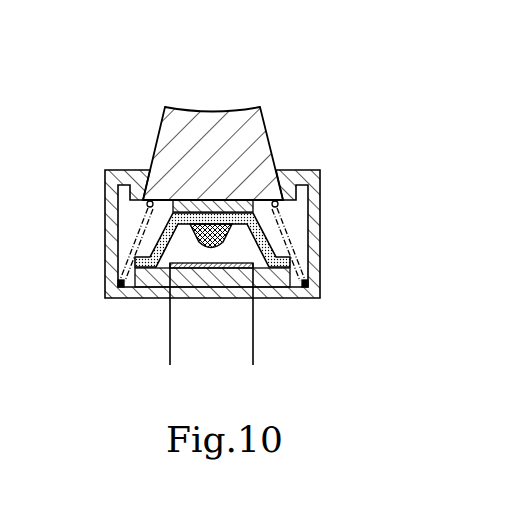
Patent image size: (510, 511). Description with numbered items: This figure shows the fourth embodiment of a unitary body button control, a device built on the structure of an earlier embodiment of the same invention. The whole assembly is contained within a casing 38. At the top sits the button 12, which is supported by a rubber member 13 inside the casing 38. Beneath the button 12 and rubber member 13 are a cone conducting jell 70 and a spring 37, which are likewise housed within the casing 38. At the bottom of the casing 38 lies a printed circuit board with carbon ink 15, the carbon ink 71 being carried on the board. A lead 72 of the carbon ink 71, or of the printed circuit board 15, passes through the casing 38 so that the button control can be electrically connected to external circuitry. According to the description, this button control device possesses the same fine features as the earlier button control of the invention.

The button 12 is at (206, 132).
The rubber member 13 is at (168, 247).
The printed circuit board with carbon ink 15 is at (272, 280).
The spring 37 is at (147, 219).
The casing 38 is at (322, 196).
The cone conducting jell 70 is at (126, 242).
The carbon ink 71 is at (240, 263).
The lead 72 is at (170, 338).